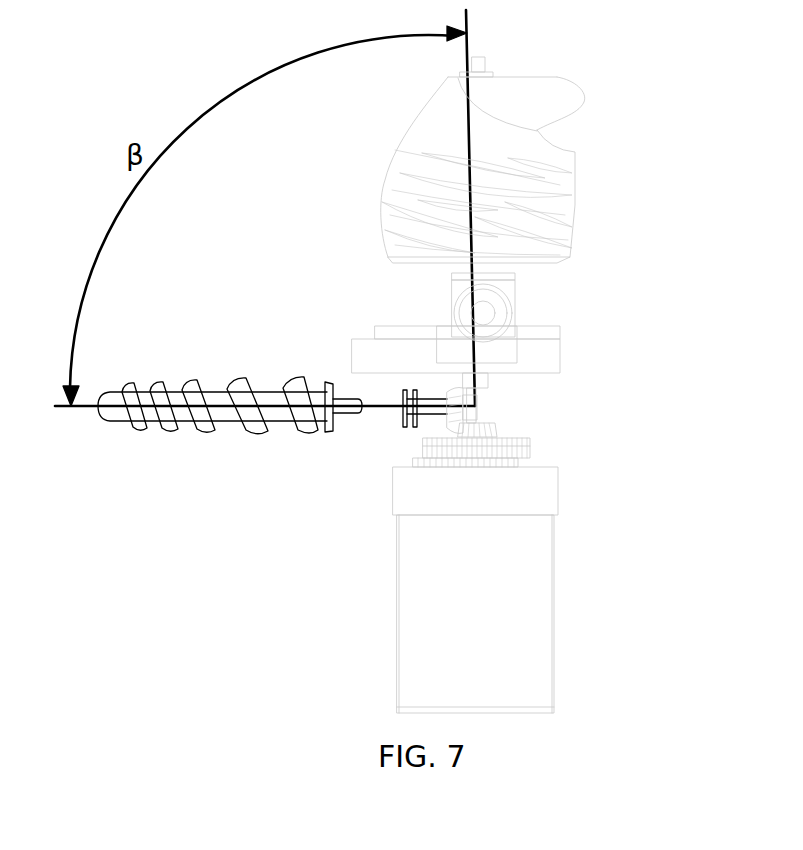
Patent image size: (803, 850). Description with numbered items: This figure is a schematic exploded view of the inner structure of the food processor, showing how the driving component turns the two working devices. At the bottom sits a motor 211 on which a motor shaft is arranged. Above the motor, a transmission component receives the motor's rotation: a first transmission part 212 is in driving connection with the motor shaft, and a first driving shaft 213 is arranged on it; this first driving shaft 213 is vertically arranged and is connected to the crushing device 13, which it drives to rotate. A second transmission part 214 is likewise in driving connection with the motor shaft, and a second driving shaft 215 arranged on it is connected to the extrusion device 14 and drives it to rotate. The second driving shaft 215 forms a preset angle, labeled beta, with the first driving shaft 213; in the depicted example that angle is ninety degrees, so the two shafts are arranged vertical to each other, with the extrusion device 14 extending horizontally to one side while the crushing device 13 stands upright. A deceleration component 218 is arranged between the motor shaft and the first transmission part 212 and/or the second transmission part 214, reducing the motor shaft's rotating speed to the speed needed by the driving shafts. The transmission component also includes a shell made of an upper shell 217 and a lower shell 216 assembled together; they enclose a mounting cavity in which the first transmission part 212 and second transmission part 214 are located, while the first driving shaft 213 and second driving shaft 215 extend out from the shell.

The crushing device 13 is at (453, 137).
The extrusion device 14 is at (225, 403).
The motor 211 is at (520, 648).
The first transmission part 212 is at (483, 430).
The first driving shaft 213 is at (473, 405).
The second transmission part 214 is at (458, 410).
The second driving shaft 215 is at (347, 410).
The lower shell 216 is at (537, 503).
The upper shell 217 is at (519, 337).
The deceleration component 218 is at (507, 457).